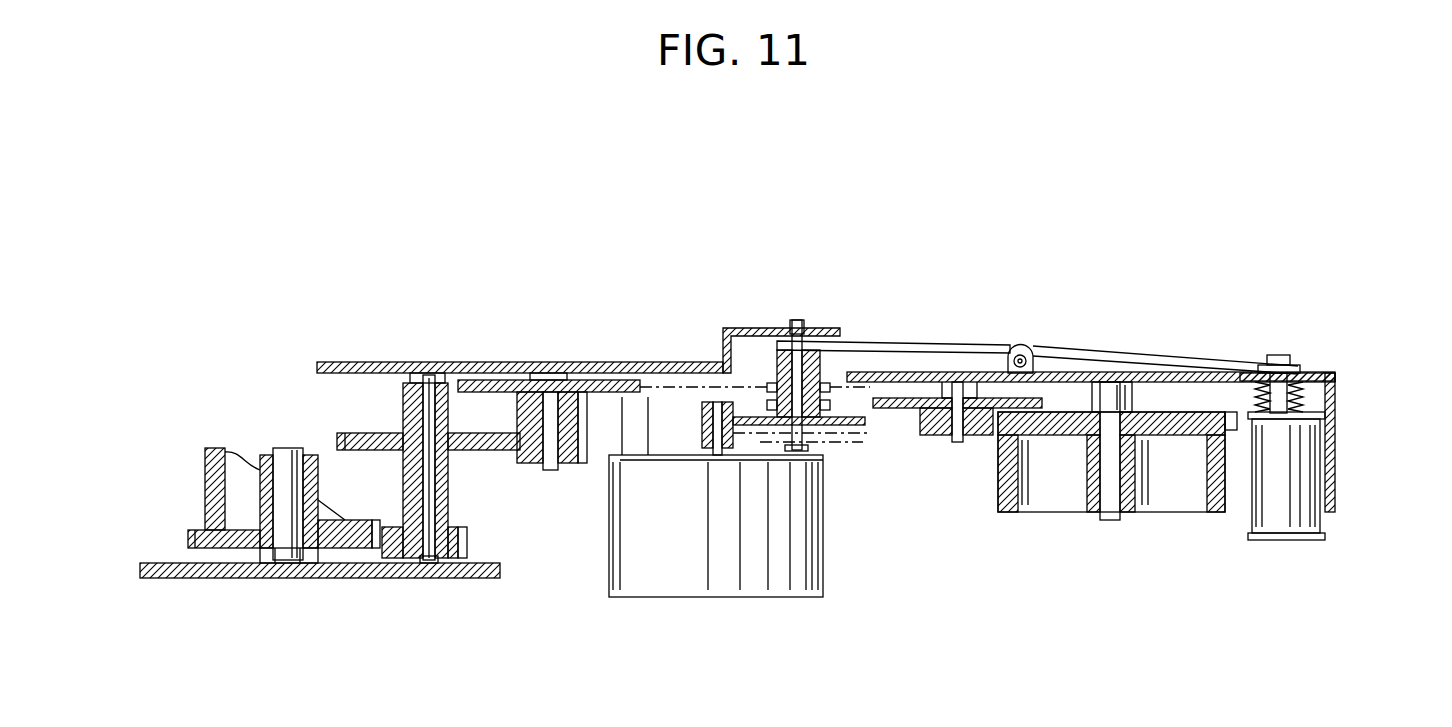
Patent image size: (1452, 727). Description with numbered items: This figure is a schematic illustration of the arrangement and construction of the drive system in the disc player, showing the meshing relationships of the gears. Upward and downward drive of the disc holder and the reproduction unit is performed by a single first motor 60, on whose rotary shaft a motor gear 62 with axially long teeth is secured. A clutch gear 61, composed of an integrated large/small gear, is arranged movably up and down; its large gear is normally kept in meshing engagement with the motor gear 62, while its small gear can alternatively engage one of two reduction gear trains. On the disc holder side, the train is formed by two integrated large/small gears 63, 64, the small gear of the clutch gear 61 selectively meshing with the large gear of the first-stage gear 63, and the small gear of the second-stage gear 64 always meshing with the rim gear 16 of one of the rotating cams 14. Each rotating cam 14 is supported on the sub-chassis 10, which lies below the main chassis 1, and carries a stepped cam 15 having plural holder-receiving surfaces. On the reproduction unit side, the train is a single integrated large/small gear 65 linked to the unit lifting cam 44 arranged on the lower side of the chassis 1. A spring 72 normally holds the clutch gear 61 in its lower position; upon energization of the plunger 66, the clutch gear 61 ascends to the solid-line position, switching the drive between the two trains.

The main chassis 1 is at (363, 362).
The sub-chassis 10 is at (264, 580).
The rotating cam 14 is at (203, 480).
The stepped cam 15 is at (218, 447).
The rim gear 16 is at (190, 540).
The unit lifting cam 44 is at (995, 500).
The first motor 60 is at (722, 600).
The clutch gear 61 is at (770, 375).
The motor gear 62 is at (700, 425).
The first-stage integrated large/small gear 63 is at (568, 470).
The second-stage integrated large/small gear 64 is at (450, 492).
The integrated large/small gear 65 is at (933, 441).
The plunger 66 is at (1250, 515).
The spring 72 is at (1297, 400).